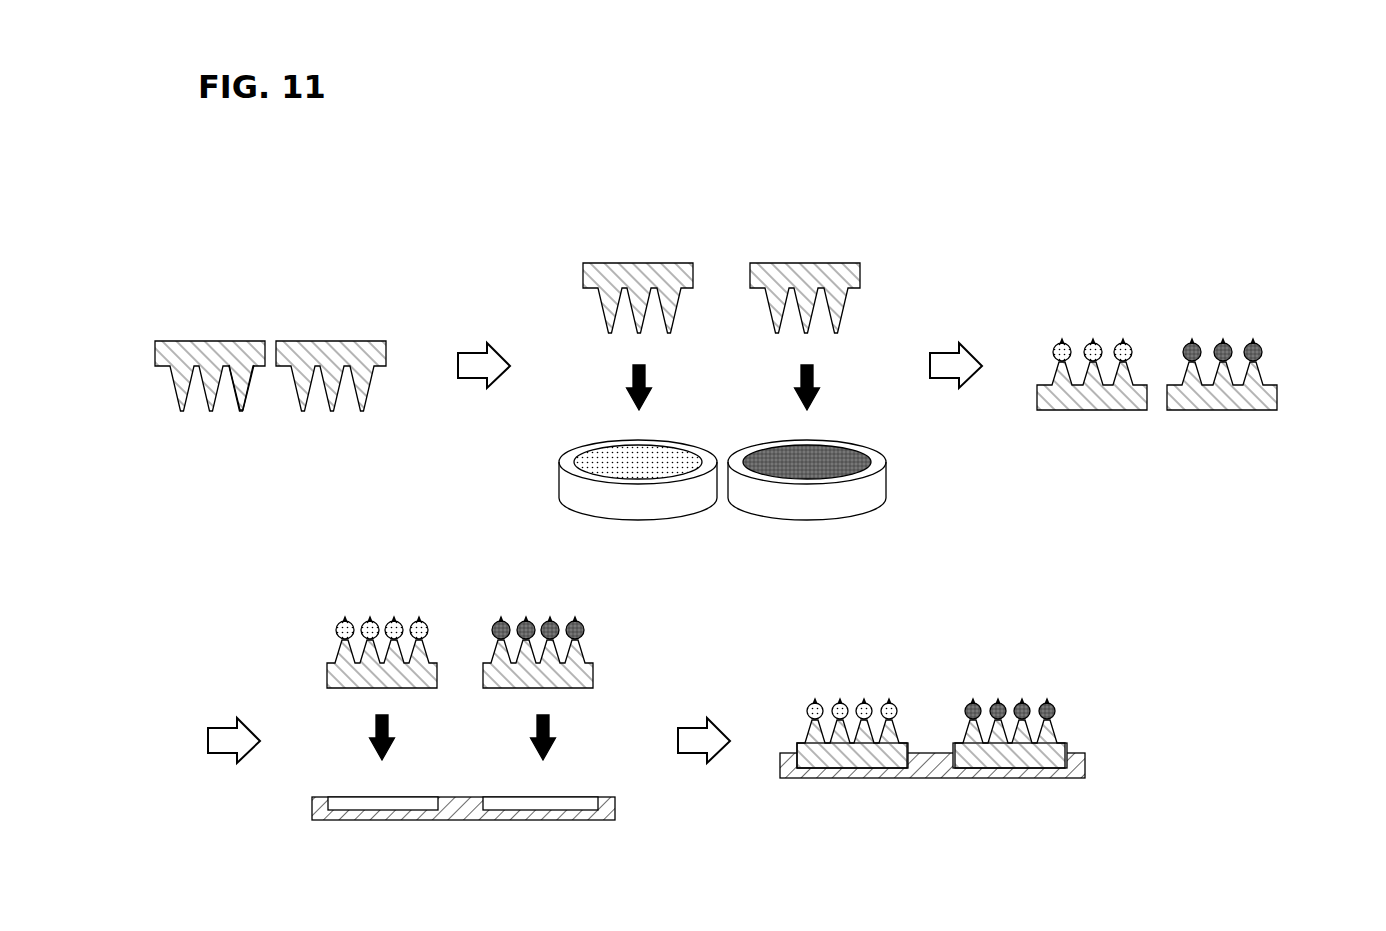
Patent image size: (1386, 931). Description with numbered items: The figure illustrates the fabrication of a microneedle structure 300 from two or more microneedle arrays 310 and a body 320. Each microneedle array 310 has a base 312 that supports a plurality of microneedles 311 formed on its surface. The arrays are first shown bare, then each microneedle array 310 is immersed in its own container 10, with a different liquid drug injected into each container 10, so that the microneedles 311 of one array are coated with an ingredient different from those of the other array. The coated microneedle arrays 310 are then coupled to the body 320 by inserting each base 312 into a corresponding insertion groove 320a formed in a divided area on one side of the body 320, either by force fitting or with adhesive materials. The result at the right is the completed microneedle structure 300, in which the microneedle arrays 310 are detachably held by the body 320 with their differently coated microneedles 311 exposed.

The container 10 is at (873, 484).
The microneedle structure 300 is at (1089, 692).
The microneedle array 310 is at (738, 382).
The microneedle 311 is at (230, 415).
The base 312 is at (155, 368).
The body 320 is at (505, 784).
The insertion groove 320a is at (557, 802).